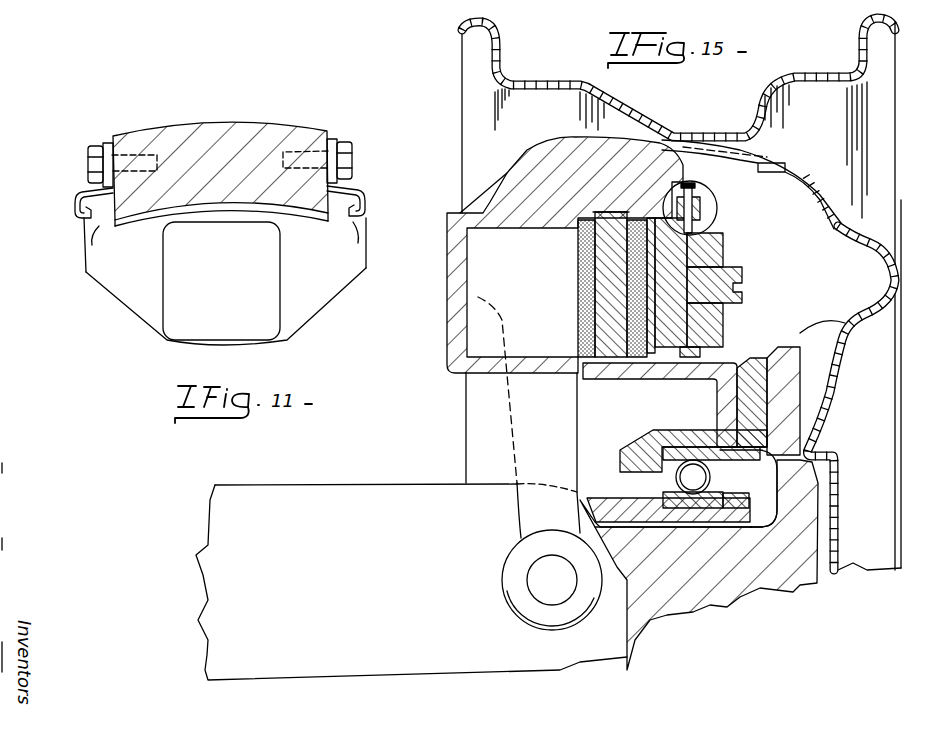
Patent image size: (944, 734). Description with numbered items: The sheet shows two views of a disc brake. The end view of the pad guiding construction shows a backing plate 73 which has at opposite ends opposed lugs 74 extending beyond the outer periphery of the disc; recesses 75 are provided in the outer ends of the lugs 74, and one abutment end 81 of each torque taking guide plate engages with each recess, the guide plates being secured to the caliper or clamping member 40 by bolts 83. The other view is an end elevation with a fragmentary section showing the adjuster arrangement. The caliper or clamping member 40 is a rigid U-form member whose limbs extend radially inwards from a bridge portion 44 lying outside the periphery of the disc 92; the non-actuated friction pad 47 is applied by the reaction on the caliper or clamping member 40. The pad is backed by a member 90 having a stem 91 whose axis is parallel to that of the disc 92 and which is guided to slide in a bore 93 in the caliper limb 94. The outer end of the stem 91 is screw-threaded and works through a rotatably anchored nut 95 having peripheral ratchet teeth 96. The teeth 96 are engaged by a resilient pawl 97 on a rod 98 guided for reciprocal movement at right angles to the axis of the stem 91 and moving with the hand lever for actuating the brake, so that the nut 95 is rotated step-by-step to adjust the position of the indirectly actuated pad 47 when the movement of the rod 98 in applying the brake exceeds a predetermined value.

In FIG. 15, the caliper or clamping member 40 is at (545, 192).
In FIG. 15, the bridge portion 44 is at (580, 150).
In FIG. 15, the non-actuated friction pad 47 is at (663, 217).
In FIG. 11, the backing plate 73 is at (297, 313).
In FIG. 11, the lugs 74 is at (84, 250).
In FIG. 11, the recesses 75 is at (84, 222).
In FIG. 11, the abutment end 81 is at (75, 200).
In FIG. 11, the bolts 83 is at (88, 160).
In FIG. 15, the member 90 is at (712, 220).
In FIG. 15, the stem 91 is at (723, 327).
In FIG. 15, the disc 92 is at (612, 343).
In FIG. 15, the bore 93 is at (723, 242).
In FIG. 15, the caliper limb 94 is at (674, 217).
In FIG. 15, the rotatably anchored nut 95 is at (725, 250).
In FIG. 15, the peripheral ratchet teeth 96 is at (703, 353).
In FIG. 15, the resilient pawl 97 is at (702, 203).
In FIG. 15, the rod 98 is at (702, 187).